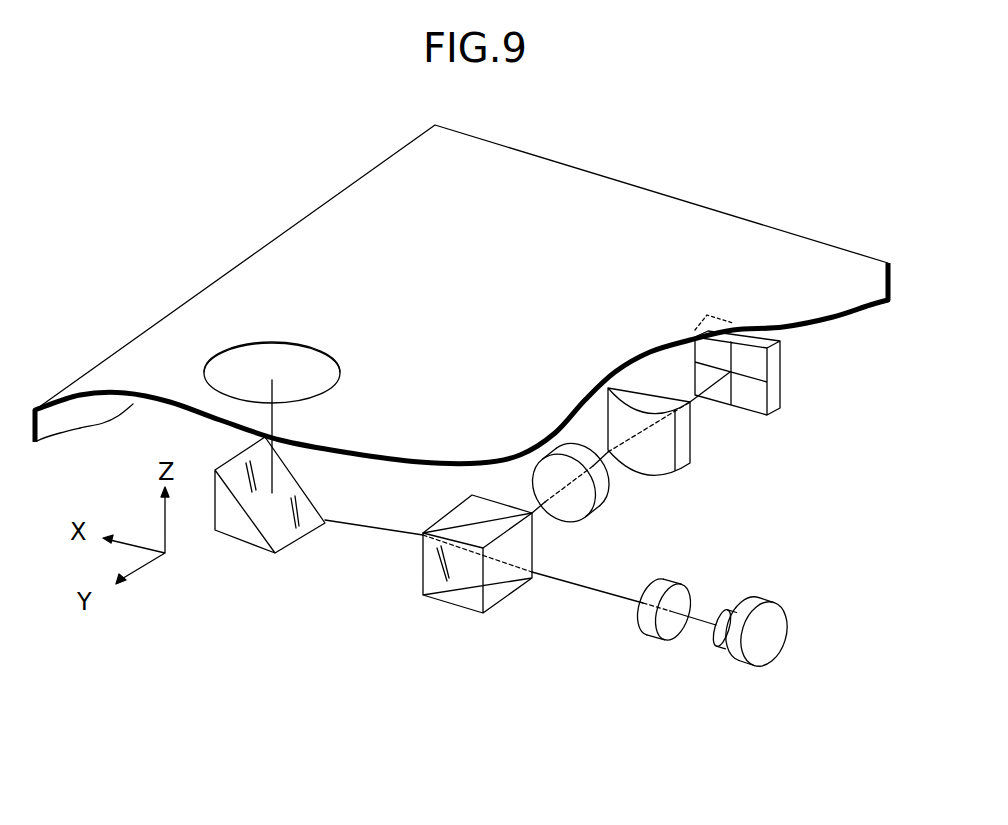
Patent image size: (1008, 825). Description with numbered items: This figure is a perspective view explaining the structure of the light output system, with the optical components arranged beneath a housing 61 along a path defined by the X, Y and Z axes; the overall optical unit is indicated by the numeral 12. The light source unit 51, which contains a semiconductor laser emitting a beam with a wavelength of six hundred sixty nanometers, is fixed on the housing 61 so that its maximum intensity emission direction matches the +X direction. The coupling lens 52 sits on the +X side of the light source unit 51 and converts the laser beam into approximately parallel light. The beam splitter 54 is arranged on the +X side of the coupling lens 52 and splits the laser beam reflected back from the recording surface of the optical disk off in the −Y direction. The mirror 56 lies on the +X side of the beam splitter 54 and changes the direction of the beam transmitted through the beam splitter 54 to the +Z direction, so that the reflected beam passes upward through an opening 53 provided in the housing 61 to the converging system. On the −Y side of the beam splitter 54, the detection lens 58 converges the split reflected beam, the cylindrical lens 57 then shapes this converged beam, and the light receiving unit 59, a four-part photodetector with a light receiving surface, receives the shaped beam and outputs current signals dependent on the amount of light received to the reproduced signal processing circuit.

The optical unit 12 is at (360, 668).
The light source unit 51 is at (748, 667).
The coupling lens 52 is at (663, 642).
The opening 53 is at (240, 358).
The beam splitter 54 is at (457, 607).
The mirror 56 is at (308, 537).
The cylindrical lens 57 is at (688, 440).
The detection lens 58 is at (594, 512).
The light receiving unit 59 is at (782, 372).
The housing 61 is at (652, 190).